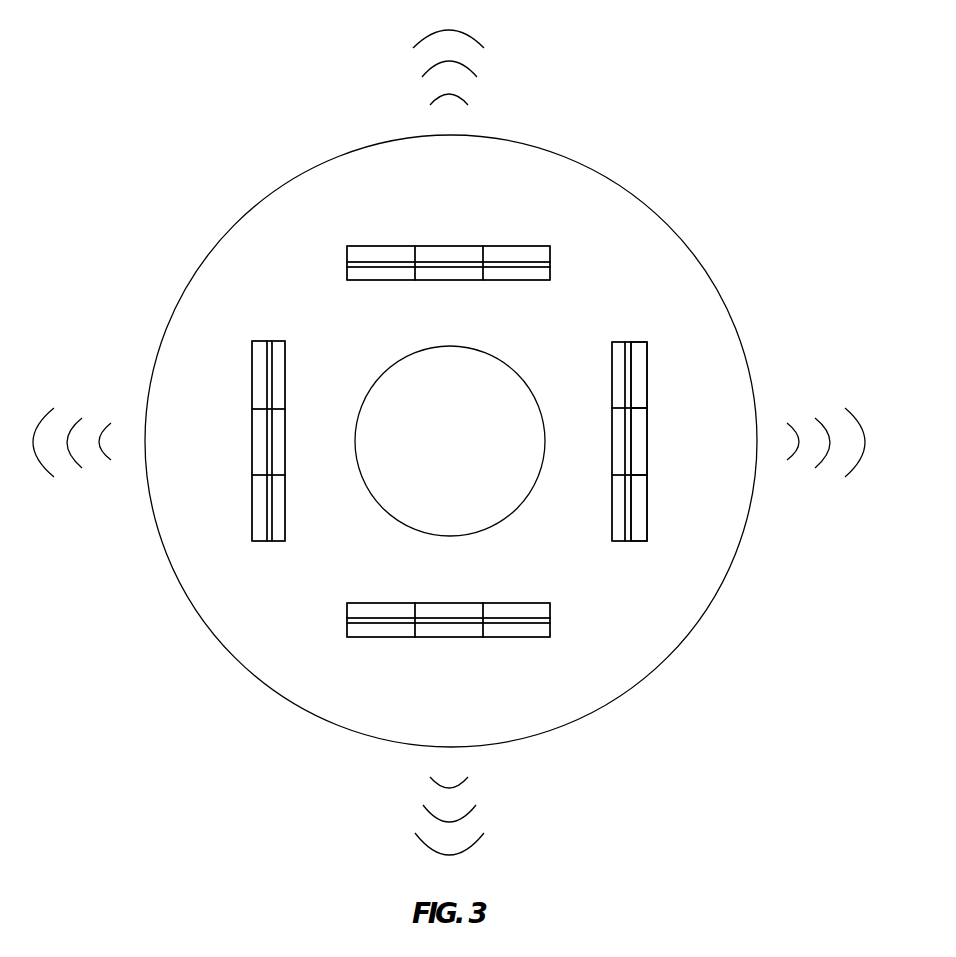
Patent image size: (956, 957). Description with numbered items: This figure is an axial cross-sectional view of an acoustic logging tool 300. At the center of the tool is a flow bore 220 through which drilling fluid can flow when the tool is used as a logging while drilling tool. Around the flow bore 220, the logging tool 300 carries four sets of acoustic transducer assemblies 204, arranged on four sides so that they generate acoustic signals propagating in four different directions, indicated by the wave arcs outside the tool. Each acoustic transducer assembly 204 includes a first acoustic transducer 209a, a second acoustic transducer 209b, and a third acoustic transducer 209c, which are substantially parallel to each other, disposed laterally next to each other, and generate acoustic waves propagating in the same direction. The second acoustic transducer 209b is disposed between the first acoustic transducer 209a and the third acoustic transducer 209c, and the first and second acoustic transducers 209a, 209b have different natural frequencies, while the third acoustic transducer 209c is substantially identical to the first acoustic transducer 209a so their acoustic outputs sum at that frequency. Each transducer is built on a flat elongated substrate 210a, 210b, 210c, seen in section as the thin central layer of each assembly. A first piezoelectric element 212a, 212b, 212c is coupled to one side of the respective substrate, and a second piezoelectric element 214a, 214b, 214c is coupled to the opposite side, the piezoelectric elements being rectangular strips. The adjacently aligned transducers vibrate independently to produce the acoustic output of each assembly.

The acoustic logging tool 300 is at (780, 64).
The acoustic transducer assembly 204 is at (543, 230).
The first acoustic transducer 209a is at (650, 345).
The second acoustic transducer 209b is at (650, 413).
The third acoustic transducer 209c is at (650, 530).
The substrate 210a is at (347, 264).
The substrate 210b is at (430, 262).
The substrate 210c is at (550, 264).
The first piezoelectric element 212a is at (368, 246).
The first piezoelectric element 212b is at (448, 246).
The first piezoelectric element 212c is at (515, 246).
The second piezoelectric element 214a is at (383, 280).
The second piezoelectric element 214b is at (448, 280).
The second piezoelectric element 214c is at (515, 280).
The flow bore 220 is at (468, 454).